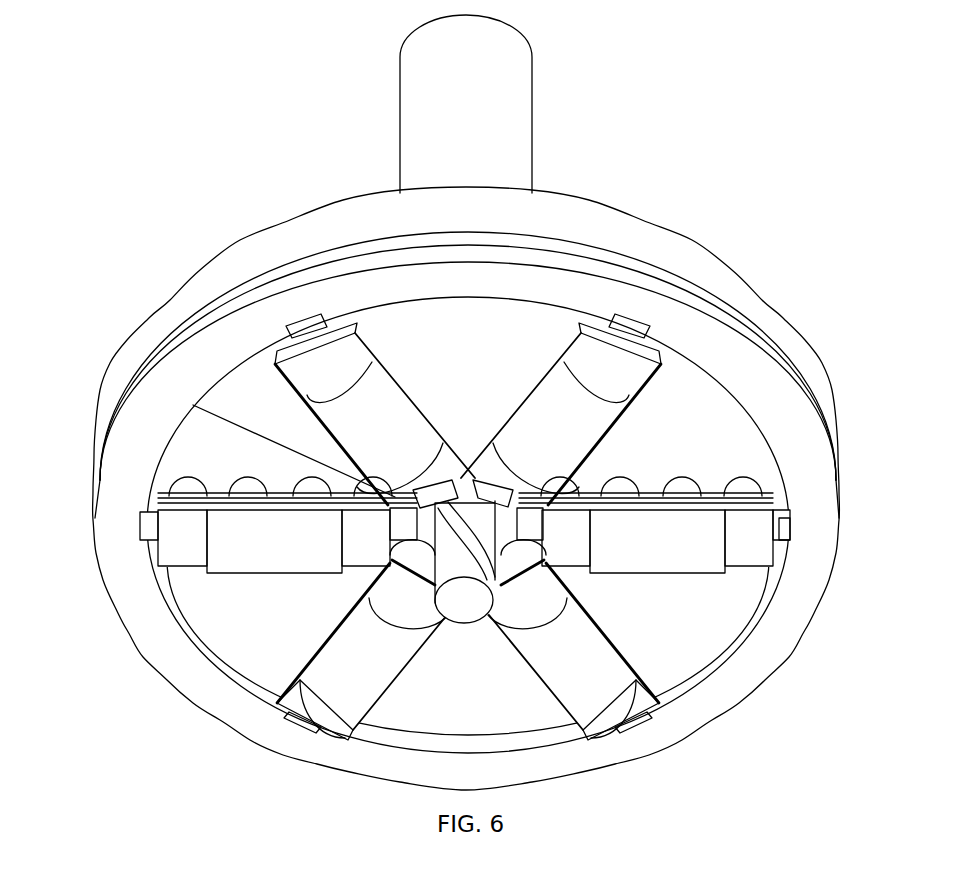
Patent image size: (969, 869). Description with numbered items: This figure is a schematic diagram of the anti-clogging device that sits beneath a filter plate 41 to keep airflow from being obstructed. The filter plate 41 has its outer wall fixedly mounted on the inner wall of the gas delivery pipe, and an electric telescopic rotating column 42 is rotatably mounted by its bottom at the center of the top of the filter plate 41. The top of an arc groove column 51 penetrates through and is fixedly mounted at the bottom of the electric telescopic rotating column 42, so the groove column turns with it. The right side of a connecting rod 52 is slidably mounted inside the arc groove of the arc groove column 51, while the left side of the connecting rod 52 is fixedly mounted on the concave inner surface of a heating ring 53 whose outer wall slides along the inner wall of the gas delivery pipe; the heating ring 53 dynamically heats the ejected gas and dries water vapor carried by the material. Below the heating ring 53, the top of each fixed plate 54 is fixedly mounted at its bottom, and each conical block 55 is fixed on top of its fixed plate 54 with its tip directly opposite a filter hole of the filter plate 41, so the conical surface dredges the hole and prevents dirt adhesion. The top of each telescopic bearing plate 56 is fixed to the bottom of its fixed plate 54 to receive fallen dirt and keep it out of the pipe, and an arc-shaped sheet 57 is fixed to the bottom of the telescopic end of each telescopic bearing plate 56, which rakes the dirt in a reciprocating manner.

The filter plate 41 is at (365, 220).
The electric telescopic rotating column 42 is at (420, 127).
The arc groove column 51 is at (465, 600).
The connecting rod 52 is at (363, 478).
The heating ring 53 is at (145, 448).
The fixed plate 54 is at (787, 518).
The conical block 55 is at (742, 490).
The telescopic bearing plate 56 is at (758, 545).
The arc-shaped sheet 57 is at (703, 545).